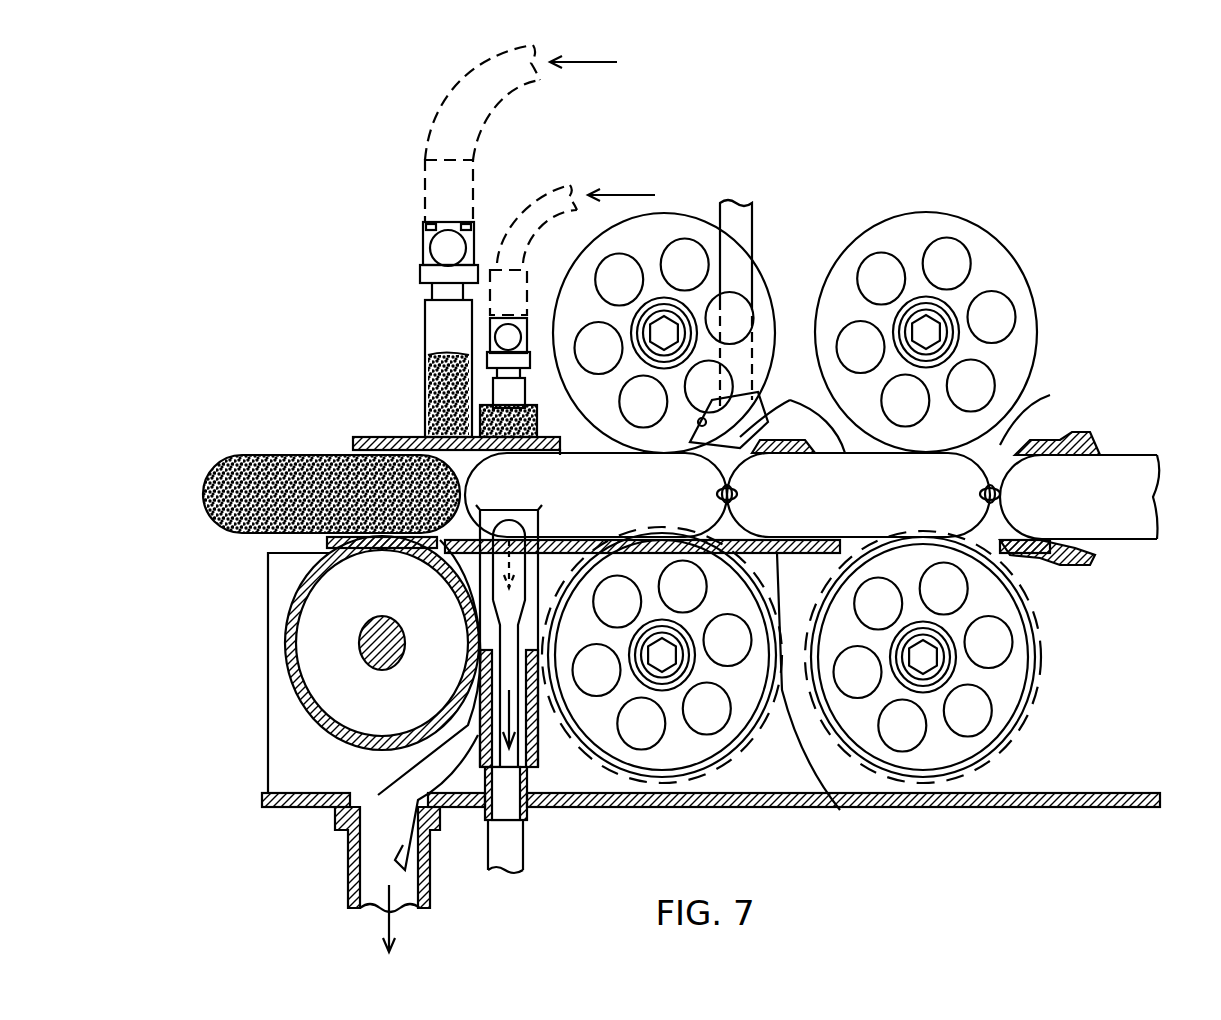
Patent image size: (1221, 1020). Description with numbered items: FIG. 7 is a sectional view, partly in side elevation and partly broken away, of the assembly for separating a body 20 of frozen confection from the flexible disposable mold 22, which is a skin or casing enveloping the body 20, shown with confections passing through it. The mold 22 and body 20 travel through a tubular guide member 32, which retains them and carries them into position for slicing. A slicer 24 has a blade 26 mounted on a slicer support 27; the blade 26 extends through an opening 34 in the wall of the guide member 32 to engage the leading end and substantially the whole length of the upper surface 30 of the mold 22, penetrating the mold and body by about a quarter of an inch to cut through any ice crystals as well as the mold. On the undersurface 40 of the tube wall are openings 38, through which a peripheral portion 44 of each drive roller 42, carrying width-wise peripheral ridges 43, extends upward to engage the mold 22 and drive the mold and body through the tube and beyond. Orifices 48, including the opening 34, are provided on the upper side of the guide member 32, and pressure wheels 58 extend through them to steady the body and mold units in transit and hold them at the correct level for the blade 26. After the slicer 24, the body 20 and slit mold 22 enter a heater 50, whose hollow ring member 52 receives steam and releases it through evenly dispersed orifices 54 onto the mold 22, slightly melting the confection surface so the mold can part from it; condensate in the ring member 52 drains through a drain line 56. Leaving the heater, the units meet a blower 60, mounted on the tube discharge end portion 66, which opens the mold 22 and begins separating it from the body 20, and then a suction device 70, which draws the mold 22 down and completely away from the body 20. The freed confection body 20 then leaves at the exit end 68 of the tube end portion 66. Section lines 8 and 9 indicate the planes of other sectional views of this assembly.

The section line 8- 8 is at (510, 258).
The section line 9- 9 is at (252, 384).
The body 20 is at (225, 478).
The flexible disposable mold 22 is at (355, 437).
The slicer 24 is at (727, 447).
The blade 26 is at (718, 410).
The slicer support 27 is at (753, 215).
The upper surface 30 is at (593, 457).
The guide member 32 is at (1050, 432).
The opening 34 is at (735, 440).
The opening 38 is at (600, 540).
The undersurface 40 is at (840, 810).
The drive roller 42 is at (655, 770).
The width-wise peripheral ridges 43 is at (762, 697).
The peripheral portion 44 is at (668, 535).
The orifice 48 is at (1010, 440).
The heater 50 is at (425, 340).
The hollow ring member 52 is at (440, 400).
The orifices 54 is at (548, 445).
The drain line 56 is at (540, 742).
The pressure wheels 58 is at (688, 215).
The blower 60 is at (428, 290).
The tube discharge end portion 66 is at (372, 437).
The exit end 68 is at (350, 450).
The suction device 70 is at (293, 590).